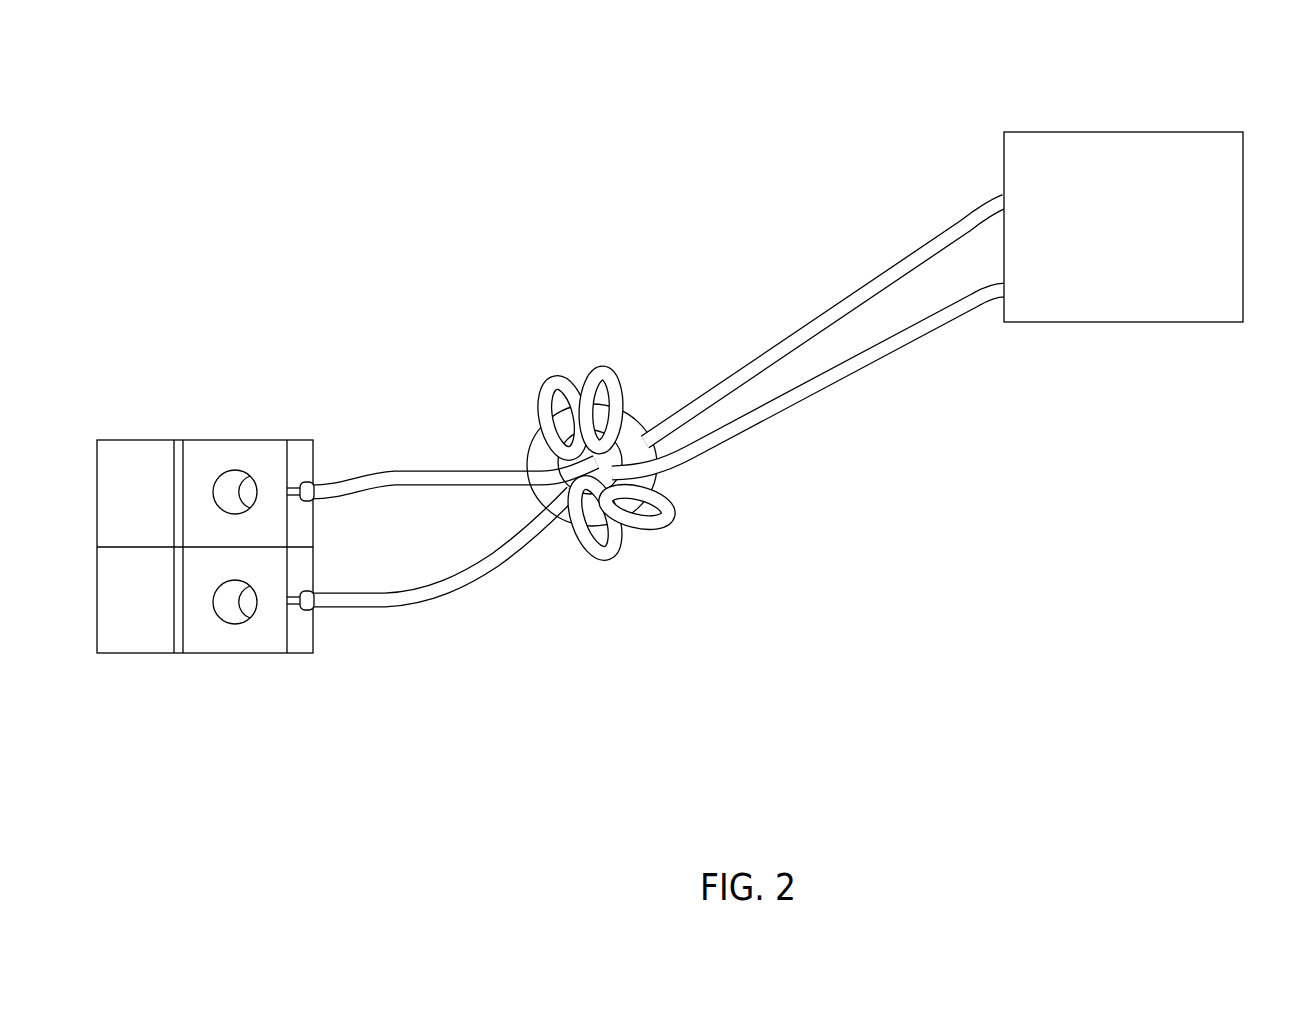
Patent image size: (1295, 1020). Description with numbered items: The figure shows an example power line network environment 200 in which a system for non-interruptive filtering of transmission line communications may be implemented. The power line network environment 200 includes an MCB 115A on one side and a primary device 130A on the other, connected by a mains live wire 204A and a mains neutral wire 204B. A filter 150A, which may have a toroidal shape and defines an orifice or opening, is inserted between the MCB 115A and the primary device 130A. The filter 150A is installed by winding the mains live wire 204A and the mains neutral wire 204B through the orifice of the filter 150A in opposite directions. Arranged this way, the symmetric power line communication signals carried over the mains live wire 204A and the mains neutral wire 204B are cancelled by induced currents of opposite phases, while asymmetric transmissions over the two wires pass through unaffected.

The power line network environment 200 is at (248, 62).
The MCB 115A is at (158, 440).
The mains live wire 204A is at (404, 469).
The mains neutral wire 204B is at (453, 595).
The filter 150A is at (625, 424).
The primary device 130A is at (1197, 132).